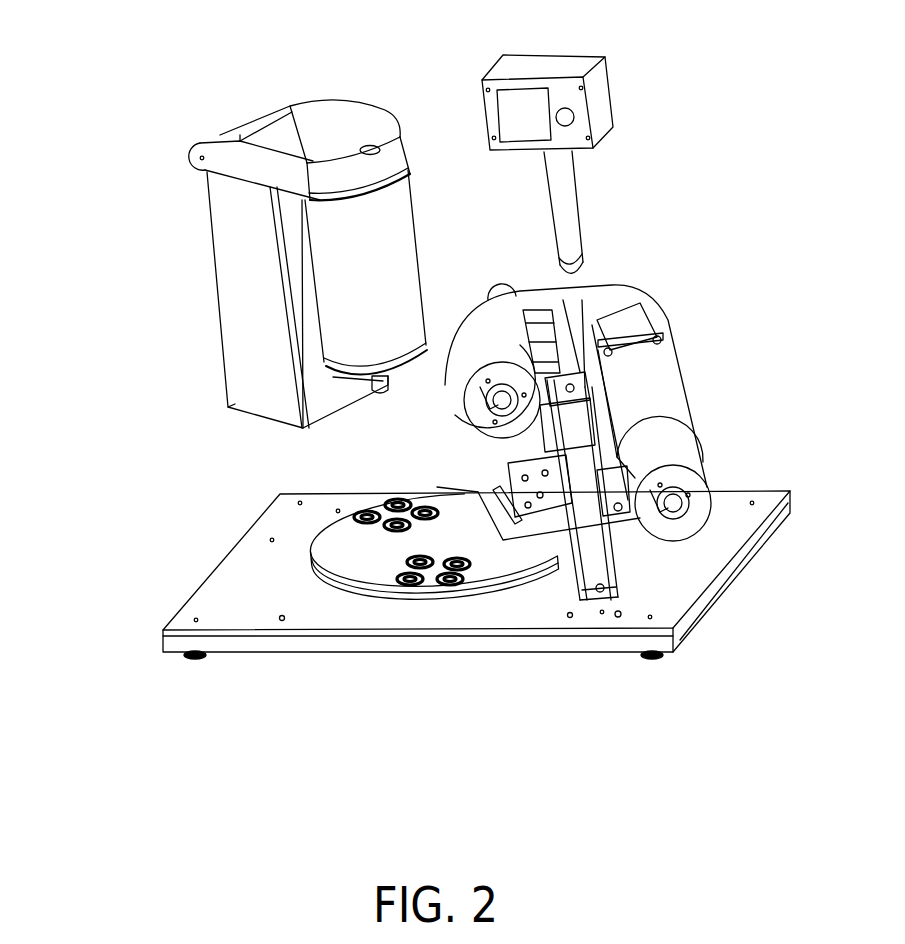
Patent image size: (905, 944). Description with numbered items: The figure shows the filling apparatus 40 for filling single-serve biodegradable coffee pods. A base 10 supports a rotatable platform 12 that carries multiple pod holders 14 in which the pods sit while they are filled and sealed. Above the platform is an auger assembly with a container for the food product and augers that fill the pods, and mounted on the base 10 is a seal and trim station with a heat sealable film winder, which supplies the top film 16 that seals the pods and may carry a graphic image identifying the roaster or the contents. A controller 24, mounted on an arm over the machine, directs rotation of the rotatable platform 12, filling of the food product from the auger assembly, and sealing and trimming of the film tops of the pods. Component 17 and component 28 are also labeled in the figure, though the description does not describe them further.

The base 10 is at (215, 604).
The rotatable platform 12 is at (338, 595).
The pod holders 14 is at (400, 501).
The top film 16 is at (263, 128).
The guide rails 17 is at (612, 565).
The controller 24 is at (562, 62).
The cover 28 is at (330, 126).
The filling apparatus 40 is at (118, 309).